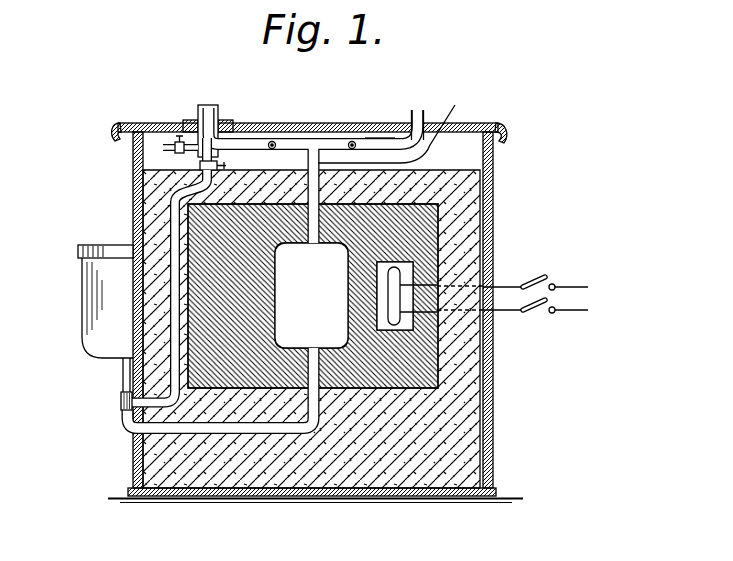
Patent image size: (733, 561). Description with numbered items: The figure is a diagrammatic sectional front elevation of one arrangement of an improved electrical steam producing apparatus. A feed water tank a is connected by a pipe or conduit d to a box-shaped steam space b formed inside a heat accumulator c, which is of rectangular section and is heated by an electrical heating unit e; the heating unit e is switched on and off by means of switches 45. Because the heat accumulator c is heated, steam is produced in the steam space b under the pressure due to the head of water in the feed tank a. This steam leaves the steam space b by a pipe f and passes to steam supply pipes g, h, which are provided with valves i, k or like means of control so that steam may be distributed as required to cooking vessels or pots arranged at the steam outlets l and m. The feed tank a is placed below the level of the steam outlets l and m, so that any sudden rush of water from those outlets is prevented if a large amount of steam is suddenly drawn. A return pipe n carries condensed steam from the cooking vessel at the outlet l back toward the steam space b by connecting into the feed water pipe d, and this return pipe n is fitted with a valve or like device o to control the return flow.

The feed water tank a is at (105, 301).
The steam space b is at (311, 295).
The heat accumulator c is at (420, 375).
The pipe or conduit d is at (122, 378).
The electrical heating unit e is at (413, 262).
The pipe f is at (389, 122).
The steam supply pipe g is at (247, 145).
The steam supply pipe h is at (376, 143).
The valve i is at (275, 142).
The valve k is at (349, 143).
The steam outlet l is at (207, 113).
The steam outlet m is at (416, 110).
The return pipe n is at (173, 212).
The valve or like device o is at (200, 166).
The switches 45 is at (538, 281).